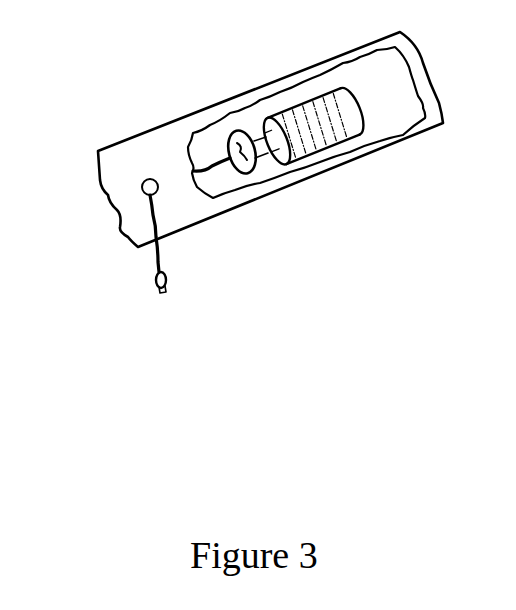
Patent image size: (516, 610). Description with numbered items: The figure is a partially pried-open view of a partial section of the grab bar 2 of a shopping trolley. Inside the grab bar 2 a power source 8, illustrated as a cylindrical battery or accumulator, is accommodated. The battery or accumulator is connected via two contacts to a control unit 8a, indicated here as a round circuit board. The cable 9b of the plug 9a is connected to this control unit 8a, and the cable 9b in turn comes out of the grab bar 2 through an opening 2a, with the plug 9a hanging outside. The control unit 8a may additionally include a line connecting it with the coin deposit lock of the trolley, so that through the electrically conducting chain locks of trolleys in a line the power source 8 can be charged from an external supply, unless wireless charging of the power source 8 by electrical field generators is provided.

The grab bar 2 is at (160, 152).
The opening 2a is at (142, 185).
The power source 8 is at (313, 117).
The control unit 8a is at (248, 158).
The cable 9b is at (213, 157).
The plug 9a is at (168, 277).